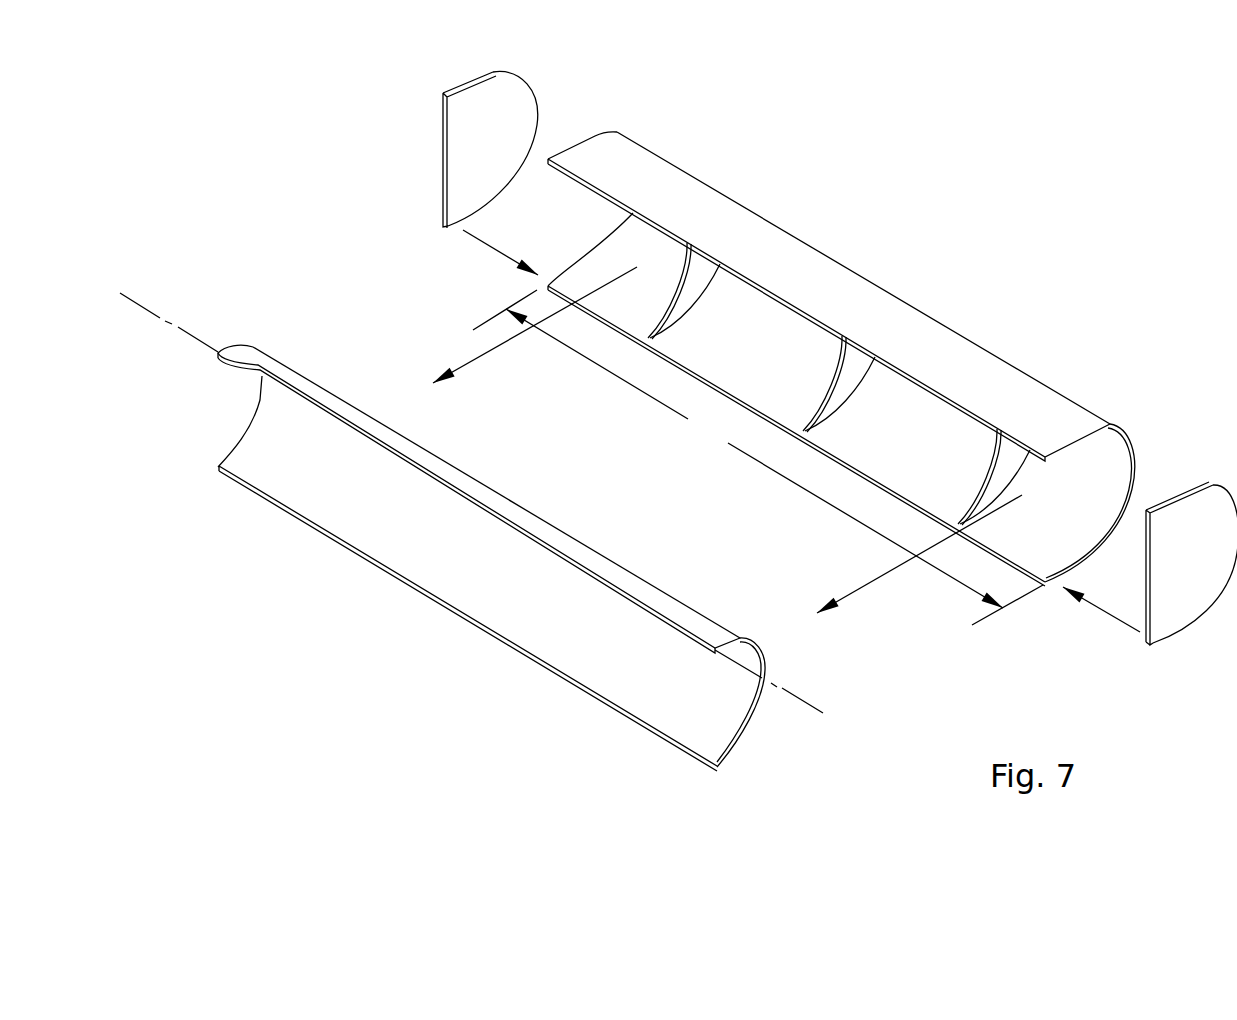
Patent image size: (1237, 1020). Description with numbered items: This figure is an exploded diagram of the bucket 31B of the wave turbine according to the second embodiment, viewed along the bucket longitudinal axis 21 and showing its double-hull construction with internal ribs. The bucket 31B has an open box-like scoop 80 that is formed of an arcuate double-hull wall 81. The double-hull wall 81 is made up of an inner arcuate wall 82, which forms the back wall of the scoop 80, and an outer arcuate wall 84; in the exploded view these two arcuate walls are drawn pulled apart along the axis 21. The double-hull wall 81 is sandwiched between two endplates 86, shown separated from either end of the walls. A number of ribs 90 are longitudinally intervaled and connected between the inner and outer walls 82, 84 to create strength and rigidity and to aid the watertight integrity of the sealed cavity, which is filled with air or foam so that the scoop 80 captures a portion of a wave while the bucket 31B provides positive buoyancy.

The bucket longitudinal axis 21 is at (795, 693).
The bucket 31B is at (250, 665).
The scoop 80 is at (513, 690).
The double-hull wall 81 is at (275, 358).
The inner arcuate wall 82 is at (296, 518).
The outer arcuate wall 84 is at (895, 295).
The endplates 86 is at (438, 156).
The ribs 90 is at (687, 317).